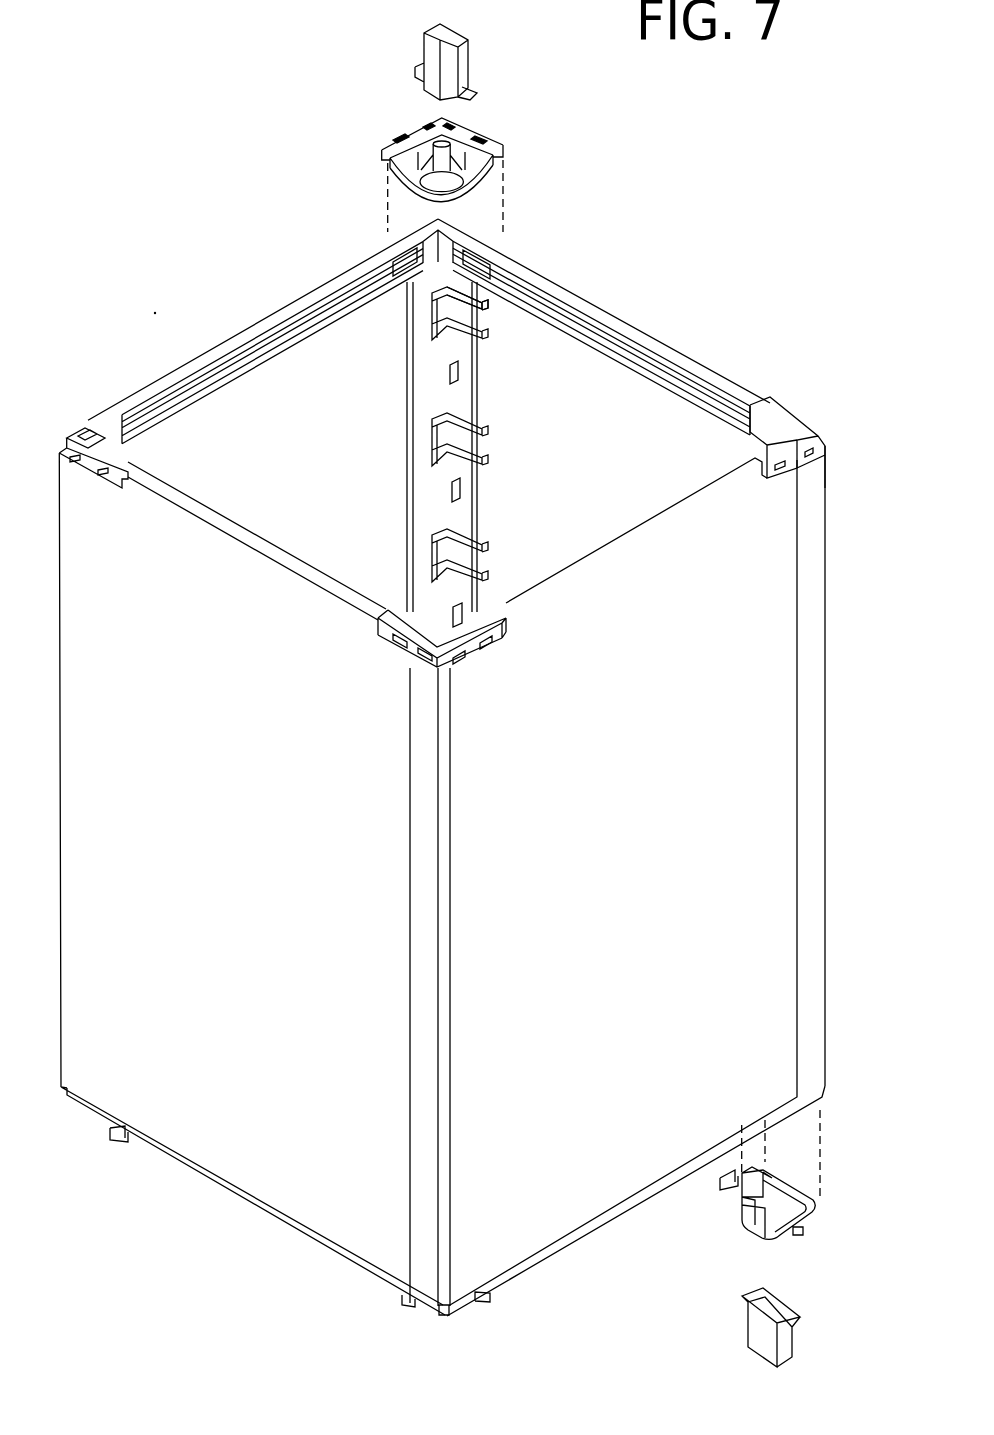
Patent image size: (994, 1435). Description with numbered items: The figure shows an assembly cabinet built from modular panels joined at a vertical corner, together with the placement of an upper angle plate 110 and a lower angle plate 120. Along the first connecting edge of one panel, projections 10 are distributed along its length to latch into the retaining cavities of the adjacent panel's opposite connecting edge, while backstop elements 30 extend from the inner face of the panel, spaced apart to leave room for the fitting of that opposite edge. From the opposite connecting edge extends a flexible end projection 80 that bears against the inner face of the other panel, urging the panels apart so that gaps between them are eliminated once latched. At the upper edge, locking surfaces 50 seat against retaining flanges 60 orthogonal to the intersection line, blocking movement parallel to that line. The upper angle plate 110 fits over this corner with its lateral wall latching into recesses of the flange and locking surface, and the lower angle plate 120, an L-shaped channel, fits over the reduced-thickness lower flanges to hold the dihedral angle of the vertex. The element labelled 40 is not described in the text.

The projections 10 is at (450, 375).
The backstop elements 30 is at (460, 318).
The clip hook 40 is at (478, 335).
The locking surfaces 50 is at (485, 250).
The retaining flanges 60 is at (392, 250).
The end projection 80 is at (418, 290).
The upper angle plates 110 is at (500, 133).
The lower angle plates 120 is at (741, 1233).